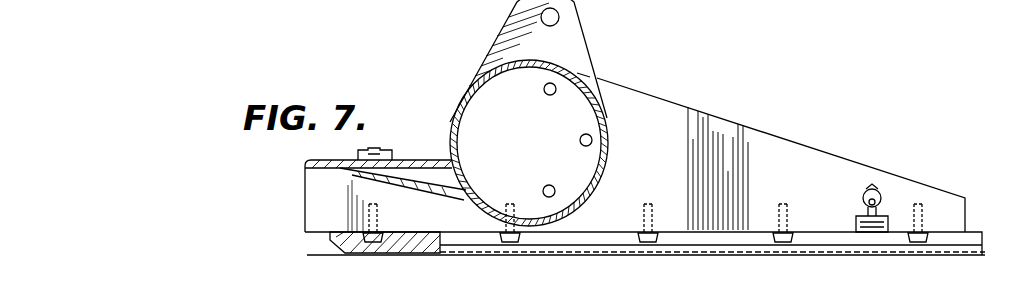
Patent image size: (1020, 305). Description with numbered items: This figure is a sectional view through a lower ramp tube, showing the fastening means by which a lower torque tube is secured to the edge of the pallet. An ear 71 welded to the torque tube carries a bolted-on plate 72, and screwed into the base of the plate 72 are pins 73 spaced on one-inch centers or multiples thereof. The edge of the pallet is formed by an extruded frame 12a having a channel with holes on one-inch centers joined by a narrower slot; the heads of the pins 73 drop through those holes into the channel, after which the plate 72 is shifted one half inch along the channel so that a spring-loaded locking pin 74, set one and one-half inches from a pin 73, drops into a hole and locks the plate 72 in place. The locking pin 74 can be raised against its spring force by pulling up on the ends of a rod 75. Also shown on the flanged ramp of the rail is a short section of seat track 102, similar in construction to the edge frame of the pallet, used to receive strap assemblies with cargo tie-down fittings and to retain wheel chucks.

The ear 71 is at (604, 42).
The plate 72 is at (792, 158).
The pins 73 is at (368, 255).
The spring-loaded locking pin 74 is at (873, 246).
The rod 75 is at (860, 200).
The seat track 102 is at (402, 150).
The extruded frame 12a is at (330, 246).